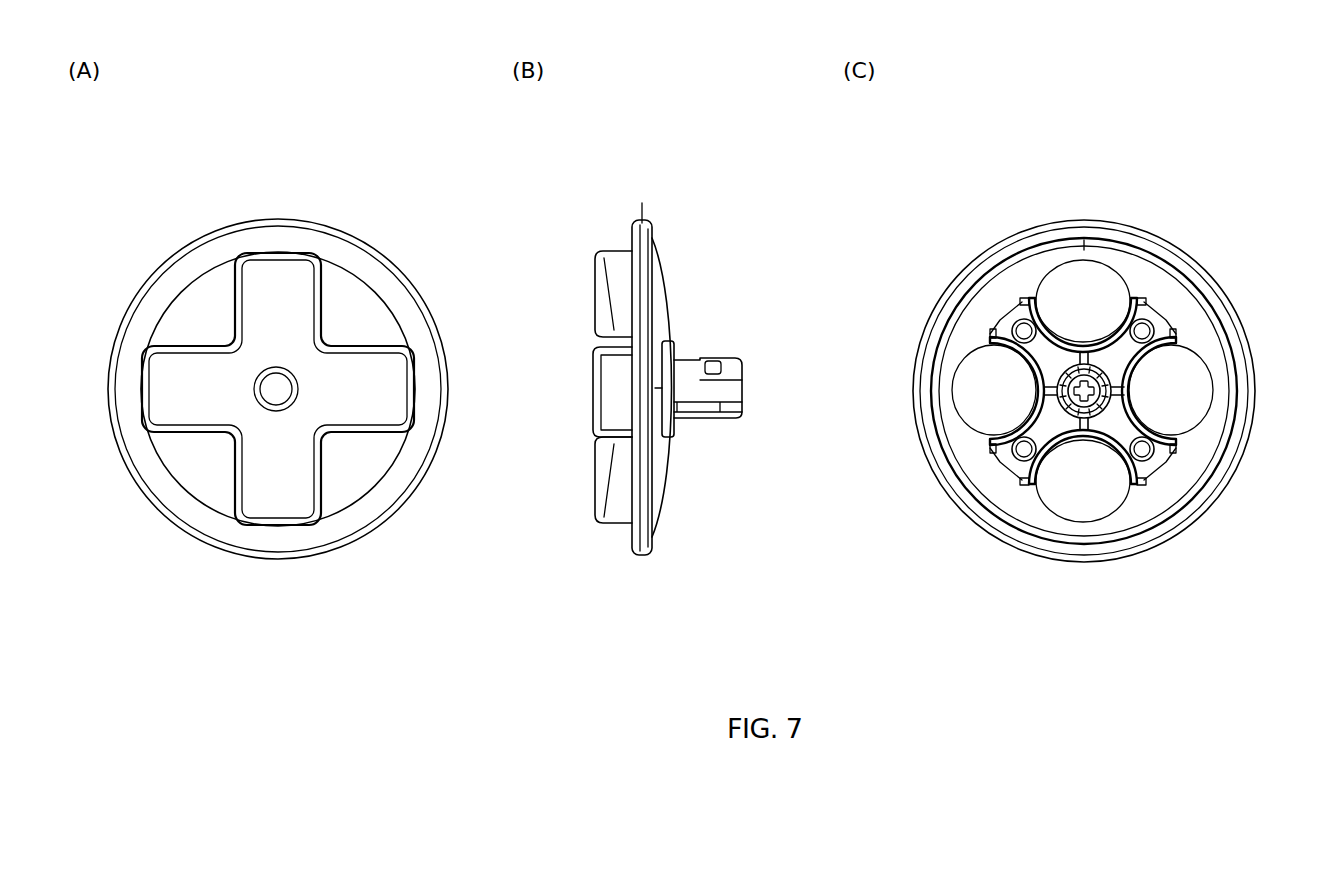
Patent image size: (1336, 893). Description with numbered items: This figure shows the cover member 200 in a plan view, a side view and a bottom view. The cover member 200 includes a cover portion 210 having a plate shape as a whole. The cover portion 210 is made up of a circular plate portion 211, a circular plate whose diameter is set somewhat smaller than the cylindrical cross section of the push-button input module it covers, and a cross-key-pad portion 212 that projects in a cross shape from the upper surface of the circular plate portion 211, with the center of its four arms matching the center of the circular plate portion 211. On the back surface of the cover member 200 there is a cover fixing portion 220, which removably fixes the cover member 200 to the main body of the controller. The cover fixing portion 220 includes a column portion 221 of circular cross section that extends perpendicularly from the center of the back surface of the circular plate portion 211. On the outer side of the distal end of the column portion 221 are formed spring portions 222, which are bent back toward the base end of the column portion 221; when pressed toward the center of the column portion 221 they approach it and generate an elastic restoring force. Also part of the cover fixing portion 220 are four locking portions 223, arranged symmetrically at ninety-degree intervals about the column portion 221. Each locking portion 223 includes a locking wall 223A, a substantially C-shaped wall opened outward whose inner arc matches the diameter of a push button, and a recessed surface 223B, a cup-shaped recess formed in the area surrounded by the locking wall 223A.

The cover member 200 is at (166, 244).
The cover portion 210 is at (147, 506).
The circular plate portion 211 is at (215, 503).
The cross-key-pad portion 212 is at (283, 508).
The cover fixing portion 220 is at (684, 355).
The column portion 221 is at (695, 396).
The spring portions 222 is at (735, 358).
The locking portions 223 is at (675, 305).
The locking wall 223A is at (1037, 287).
The recessed surface 223B is at (1087, 275).